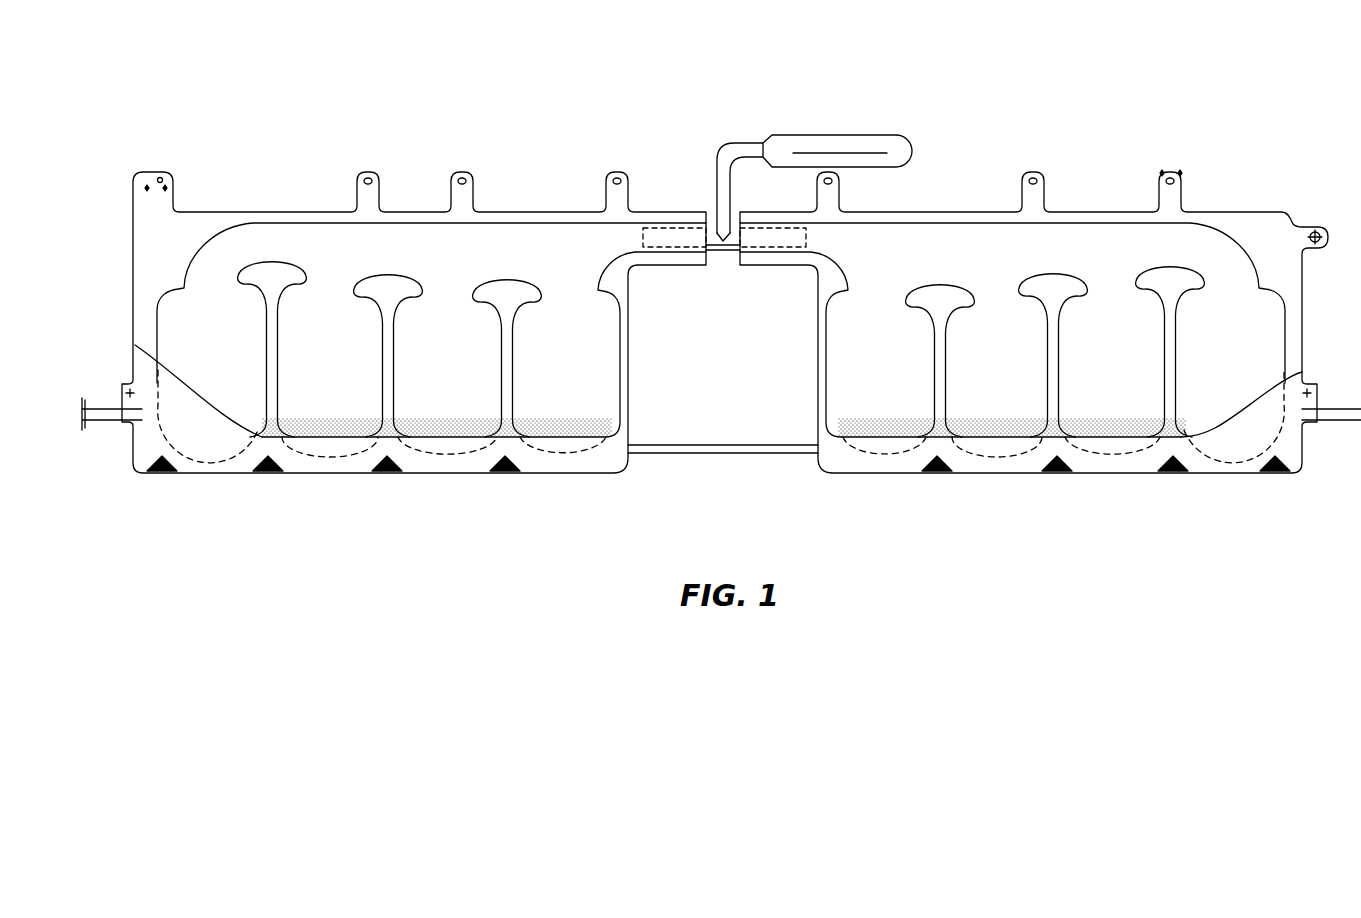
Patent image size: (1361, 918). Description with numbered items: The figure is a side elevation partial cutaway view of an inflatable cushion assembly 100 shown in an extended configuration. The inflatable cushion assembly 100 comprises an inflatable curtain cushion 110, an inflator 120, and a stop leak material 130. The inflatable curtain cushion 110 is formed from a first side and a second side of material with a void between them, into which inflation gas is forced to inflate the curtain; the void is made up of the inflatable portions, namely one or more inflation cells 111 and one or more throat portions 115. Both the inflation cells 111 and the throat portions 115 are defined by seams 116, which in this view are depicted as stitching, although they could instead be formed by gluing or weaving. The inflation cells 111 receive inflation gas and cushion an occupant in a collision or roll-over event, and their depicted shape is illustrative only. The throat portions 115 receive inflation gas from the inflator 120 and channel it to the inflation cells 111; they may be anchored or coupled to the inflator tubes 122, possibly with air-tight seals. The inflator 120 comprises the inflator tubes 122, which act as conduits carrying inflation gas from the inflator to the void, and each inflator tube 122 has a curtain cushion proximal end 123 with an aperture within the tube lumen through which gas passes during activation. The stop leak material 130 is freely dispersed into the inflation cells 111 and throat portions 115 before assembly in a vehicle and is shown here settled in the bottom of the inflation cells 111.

The inflatable cushion assembly 100 is at (867, 55).
The inflatable curtain cushion 110 is at (167, 232).
The inflation cells 111 is at (465, 353).
The throat portions 115 is at (670, 228).
The seams 116 is at (334, 462).
The inflator 120 is at (847, 132).
The inflator tubes 122 is at (643, 238).
The curtain cushion proximal end 123 is at (793, 238).
The stop leak material 130 is at (560, 430).